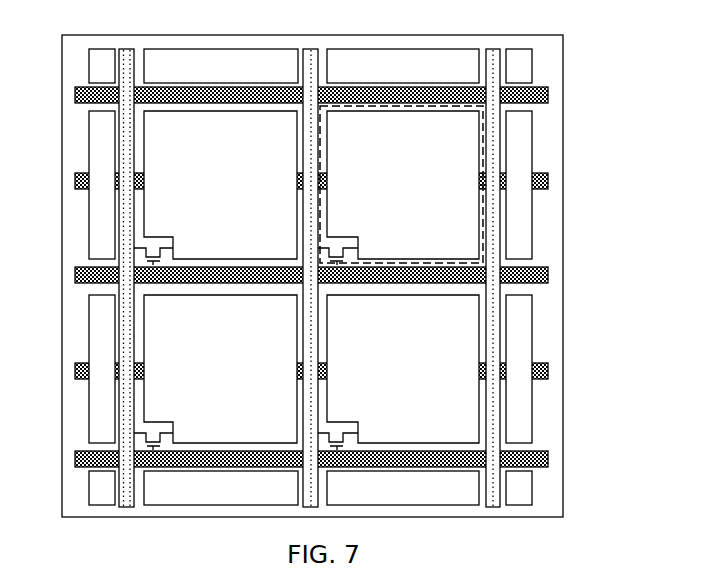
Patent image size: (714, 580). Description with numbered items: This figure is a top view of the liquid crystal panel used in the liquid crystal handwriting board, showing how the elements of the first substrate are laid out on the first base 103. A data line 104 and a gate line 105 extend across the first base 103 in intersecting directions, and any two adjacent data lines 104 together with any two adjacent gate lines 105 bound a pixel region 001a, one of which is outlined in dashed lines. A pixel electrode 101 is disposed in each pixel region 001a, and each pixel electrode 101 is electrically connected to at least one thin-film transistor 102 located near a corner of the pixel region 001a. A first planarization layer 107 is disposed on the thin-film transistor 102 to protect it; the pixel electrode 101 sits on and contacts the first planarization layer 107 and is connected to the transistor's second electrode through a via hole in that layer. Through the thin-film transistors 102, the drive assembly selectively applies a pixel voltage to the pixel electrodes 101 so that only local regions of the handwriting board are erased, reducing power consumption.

The pixel region 001a is at (483, 104).
The pixel electrode 101 is at (515, 332).
The thin-film transistor 102 is at (147, 262).
The first base 103 is at (537, 419).
The data line 104 is at (125, 53).
The gate line 105 is at (522, 460).
The first planarization layer 107 is at (538, 371).